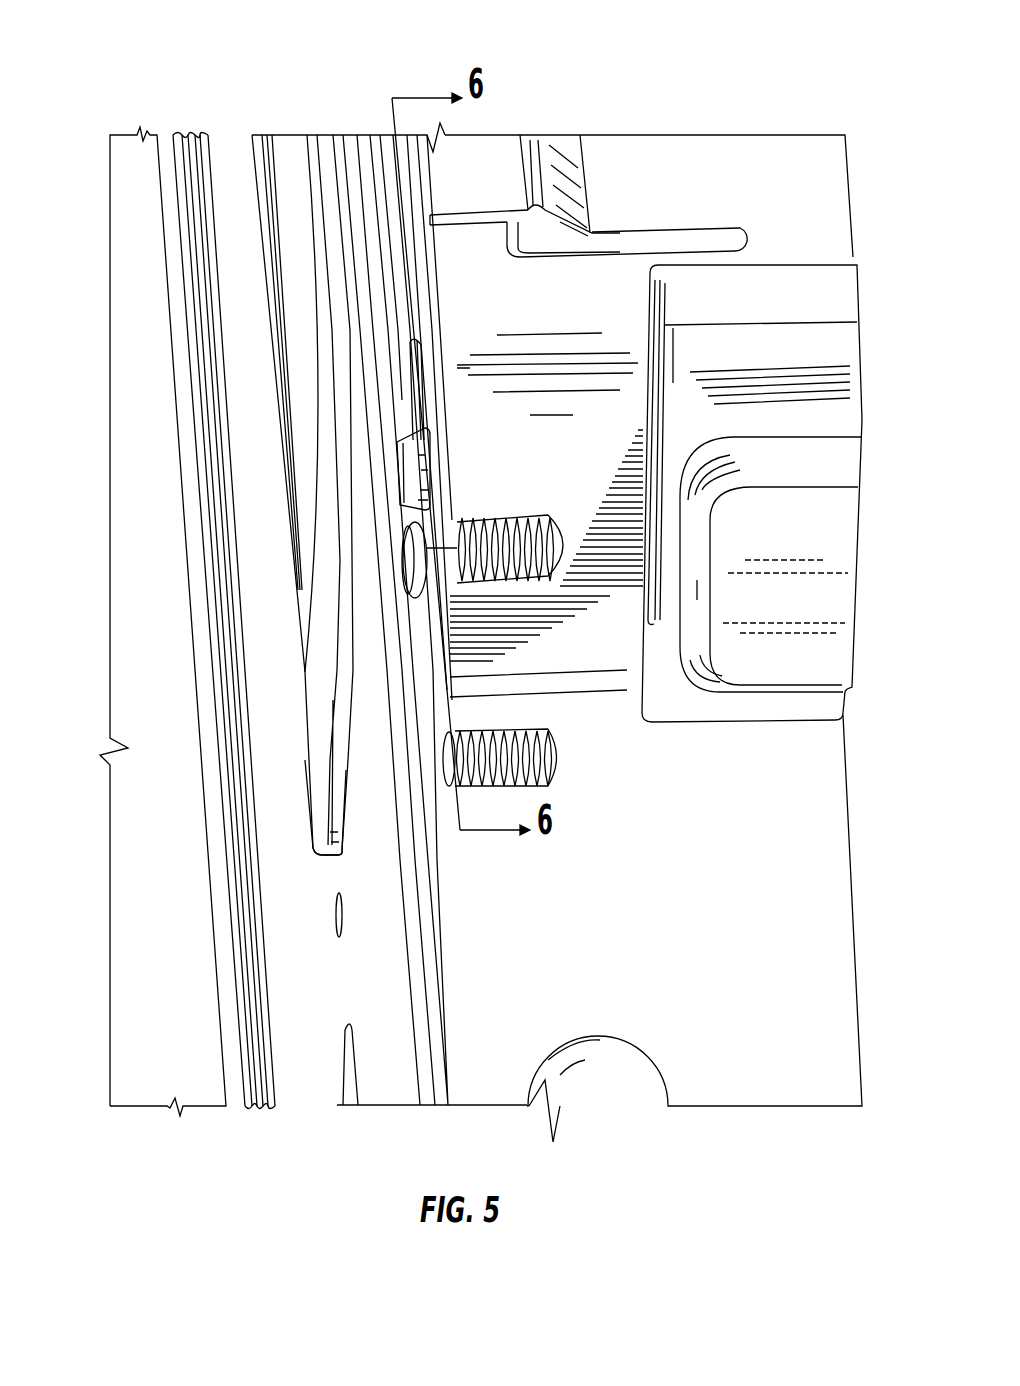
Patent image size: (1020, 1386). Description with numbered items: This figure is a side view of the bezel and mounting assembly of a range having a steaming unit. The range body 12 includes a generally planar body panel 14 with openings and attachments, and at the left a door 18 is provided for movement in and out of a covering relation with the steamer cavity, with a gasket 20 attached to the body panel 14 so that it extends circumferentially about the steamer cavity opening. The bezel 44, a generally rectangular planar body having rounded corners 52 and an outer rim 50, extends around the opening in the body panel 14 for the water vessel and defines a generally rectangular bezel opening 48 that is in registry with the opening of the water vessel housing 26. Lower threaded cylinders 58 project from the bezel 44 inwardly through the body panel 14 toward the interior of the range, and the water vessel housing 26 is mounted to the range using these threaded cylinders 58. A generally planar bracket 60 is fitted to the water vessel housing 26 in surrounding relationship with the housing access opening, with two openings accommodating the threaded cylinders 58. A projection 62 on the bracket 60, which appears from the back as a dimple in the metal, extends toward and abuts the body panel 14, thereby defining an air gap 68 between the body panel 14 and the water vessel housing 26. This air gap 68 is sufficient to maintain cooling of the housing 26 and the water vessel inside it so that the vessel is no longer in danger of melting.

The range body 12 is at (836, 851).
The body panel 14 is at (395, 1068).
The door 18 is at (127, 222).
The gasket 20 is at (188, 147).
The water vessel housing 26 is at (618, 282).
The bezel 44 is at (390, 590).
The bezel opening 48 is at (295, 182).
The rim 50 is at (337, 793).
The rounded corners 52 is at (313, 808).
The threaded cylinders 58 is at (557, 762).
The bracket 60 is at (433, 317).
The projection 62 is at (420, 463).
The air gap 68 is at (393, 367).